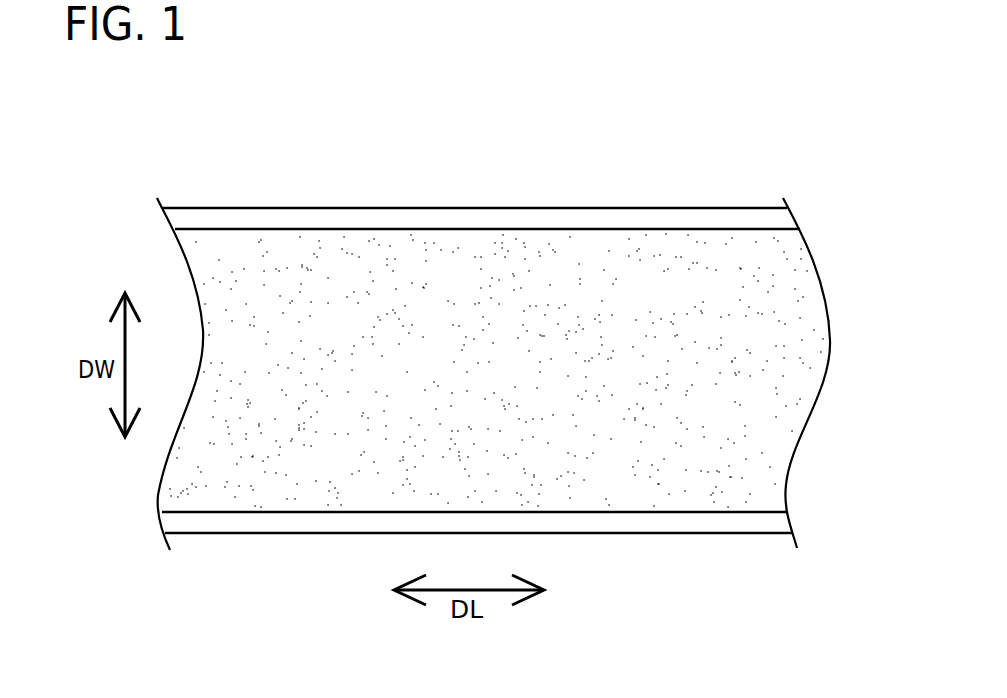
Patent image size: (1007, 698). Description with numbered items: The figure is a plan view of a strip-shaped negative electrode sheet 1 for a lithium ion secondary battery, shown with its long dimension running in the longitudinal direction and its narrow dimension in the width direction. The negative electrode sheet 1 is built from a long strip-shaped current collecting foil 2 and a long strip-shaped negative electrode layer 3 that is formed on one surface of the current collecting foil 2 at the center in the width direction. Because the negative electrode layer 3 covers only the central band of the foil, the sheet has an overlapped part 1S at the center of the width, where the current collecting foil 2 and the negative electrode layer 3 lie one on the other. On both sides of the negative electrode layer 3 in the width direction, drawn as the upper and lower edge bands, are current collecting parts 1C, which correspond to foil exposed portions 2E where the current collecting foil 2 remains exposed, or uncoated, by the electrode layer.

The negative electrode sheet 1 is at (493, 337).
The current collecting part 1C is at (658, 218).
The overlapped part 1S is at (747, 450).
The current collecting foil 2 is at (272, 520).
The foil exposed portion 2E is at (643, 522).
The negative electrode layer 3 is at (777, 265).